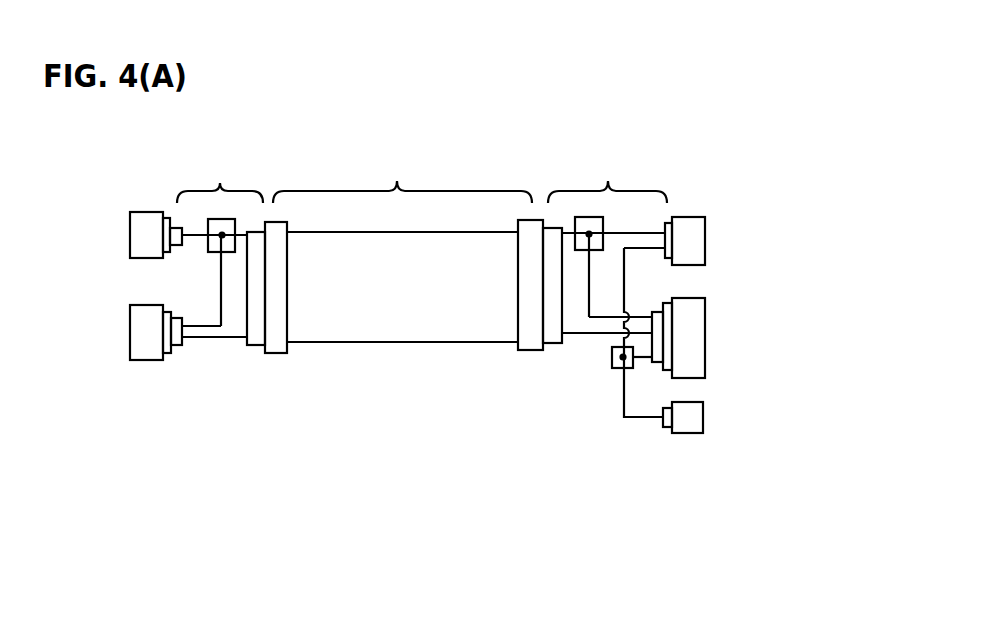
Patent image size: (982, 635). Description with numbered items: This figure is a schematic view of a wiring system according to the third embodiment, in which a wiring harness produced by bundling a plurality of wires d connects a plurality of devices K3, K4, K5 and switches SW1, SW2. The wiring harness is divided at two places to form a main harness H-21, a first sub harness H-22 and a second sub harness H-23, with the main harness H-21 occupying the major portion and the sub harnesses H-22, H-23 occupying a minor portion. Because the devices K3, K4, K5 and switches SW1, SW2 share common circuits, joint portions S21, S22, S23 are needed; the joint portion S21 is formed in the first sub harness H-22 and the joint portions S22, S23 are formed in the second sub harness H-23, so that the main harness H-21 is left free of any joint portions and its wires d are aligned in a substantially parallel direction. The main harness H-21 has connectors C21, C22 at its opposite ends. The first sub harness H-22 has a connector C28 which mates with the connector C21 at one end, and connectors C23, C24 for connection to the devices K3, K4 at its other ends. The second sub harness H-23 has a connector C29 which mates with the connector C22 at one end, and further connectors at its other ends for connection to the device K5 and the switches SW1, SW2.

The device K3 is at (147, 232).
The device K4 is at (143, 340).
The device K5 is at (688, 337).
The switch SW1 is at (688, 242).
The switch SW2 is at (688, 417).
The connector C21 is at (275, 341).
The connector C22 is at (527, 353).
The connector C23 is at (177, 249).
The connector C24 is at (178, 348).
The connector C28 is at (253, 331).
The connector C29 is at (557, 344).
The joint portion S21 is at (220, 249).
The joint portion S22 is at (603, 241).
The joint portion S23 is at (618, 368).
The main harness H-21 is at (402, 175).
The first sub harness H-22 is at (220, 177).
The second sub harness H-23 is at (607, 174).
The wire d is at (213, 341).